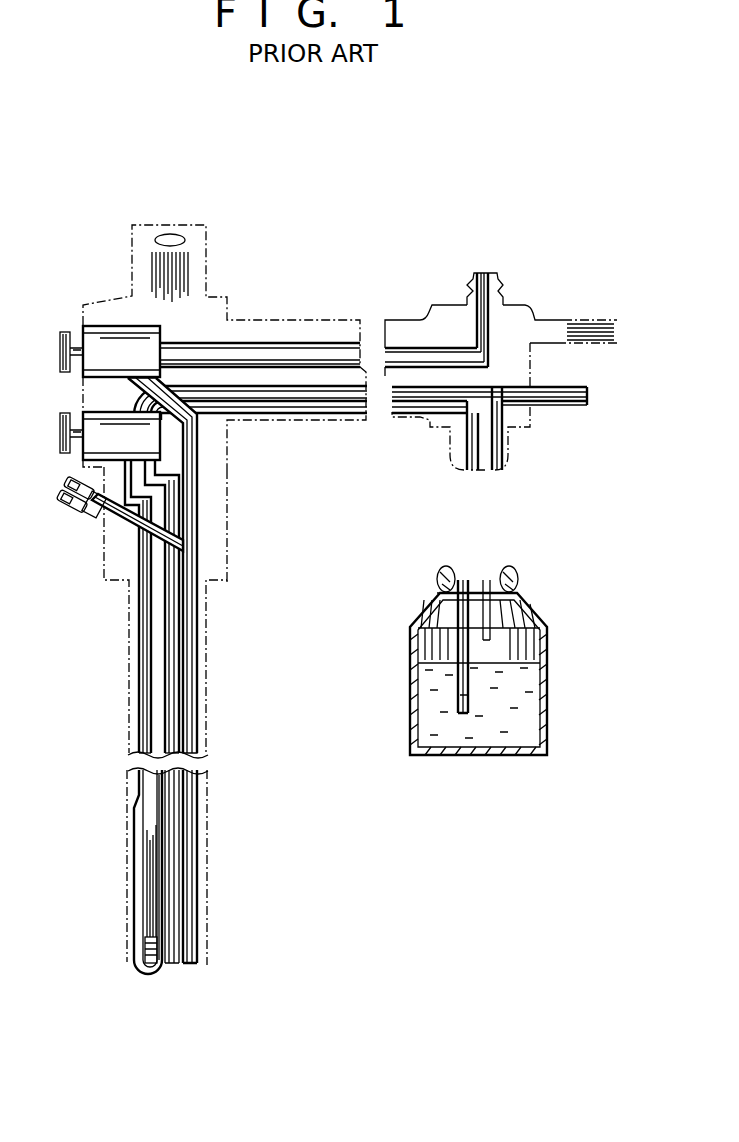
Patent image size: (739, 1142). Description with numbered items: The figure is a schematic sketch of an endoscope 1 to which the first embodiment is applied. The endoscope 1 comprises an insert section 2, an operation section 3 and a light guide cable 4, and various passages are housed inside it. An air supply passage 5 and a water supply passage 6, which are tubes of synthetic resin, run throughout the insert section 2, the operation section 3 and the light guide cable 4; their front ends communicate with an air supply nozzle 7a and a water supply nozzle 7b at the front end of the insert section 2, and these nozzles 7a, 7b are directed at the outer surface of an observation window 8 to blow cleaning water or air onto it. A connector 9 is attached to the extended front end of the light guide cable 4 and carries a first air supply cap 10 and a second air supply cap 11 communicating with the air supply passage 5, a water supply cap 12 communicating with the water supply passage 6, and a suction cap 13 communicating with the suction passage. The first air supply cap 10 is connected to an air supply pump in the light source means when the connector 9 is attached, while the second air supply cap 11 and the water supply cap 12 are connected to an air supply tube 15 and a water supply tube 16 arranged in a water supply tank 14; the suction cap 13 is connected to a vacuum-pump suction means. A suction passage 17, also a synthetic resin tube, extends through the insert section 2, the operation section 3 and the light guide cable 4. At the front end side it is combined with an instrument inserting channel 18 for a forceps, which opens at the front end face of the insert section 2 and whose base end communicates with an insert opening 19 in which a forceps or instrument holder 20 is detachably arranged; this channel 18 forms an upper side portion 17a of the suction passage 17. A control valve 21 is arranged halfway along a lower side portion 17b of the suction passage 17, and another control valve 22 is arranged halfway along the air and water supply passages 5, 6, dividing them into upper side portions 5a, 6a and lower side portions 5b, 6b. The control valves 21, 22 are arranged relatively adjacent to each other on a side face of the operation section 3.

The endoscope 1 is at (220, 648).
The insert section 2 is at (210, 833).
The operation section 3 is at (222, 518).
The light guide cable 4 is at (352, 320).
The air supply passage 5 is at (142, 697).
The upper side portion of the air supply passage 5a is at (341, 395).
The lower side portion of the air supply passage 5b is at (142, 637).
The water supply passage 6 is at (173, 695).
The upper side portion of the water supply passage 6a is at (273, 398).
The lower side portion of the water supply passage 6b is at (172, 602).
The air supply nozzle 7a is at (133, 977).
The water supply nozzle 7b is at (168, 975).
The observation window 8 is at (150, 968).
The connector 9 is at (442, 305).
The first air supply cap 10 is at (560, 410).
The second air supply cap 11 is at (497, 470).
The water supply cap 12 is at (468, 470).
The suction cap 13 is at (484, 273).
The water supply tank 14 is at (422, 722).
The air supply tube 15 is at (490, 610).
The water supply tube 16 is at (450, 613).
The suction passage 17 is at (196, 458).
The upper side portion of the suction passage 17a is at (190, 863).
The lower side portion of the suction passage 17b is at (284, 346).
The instrument inserting channel 18 is at (130, 536).
The insert opening 19 is at (76, 506).
The forceps or instrument holder 20 is at (62, 486).
The control valve 21 is at (85, 343).
The control valve 22 is at (88, 424).